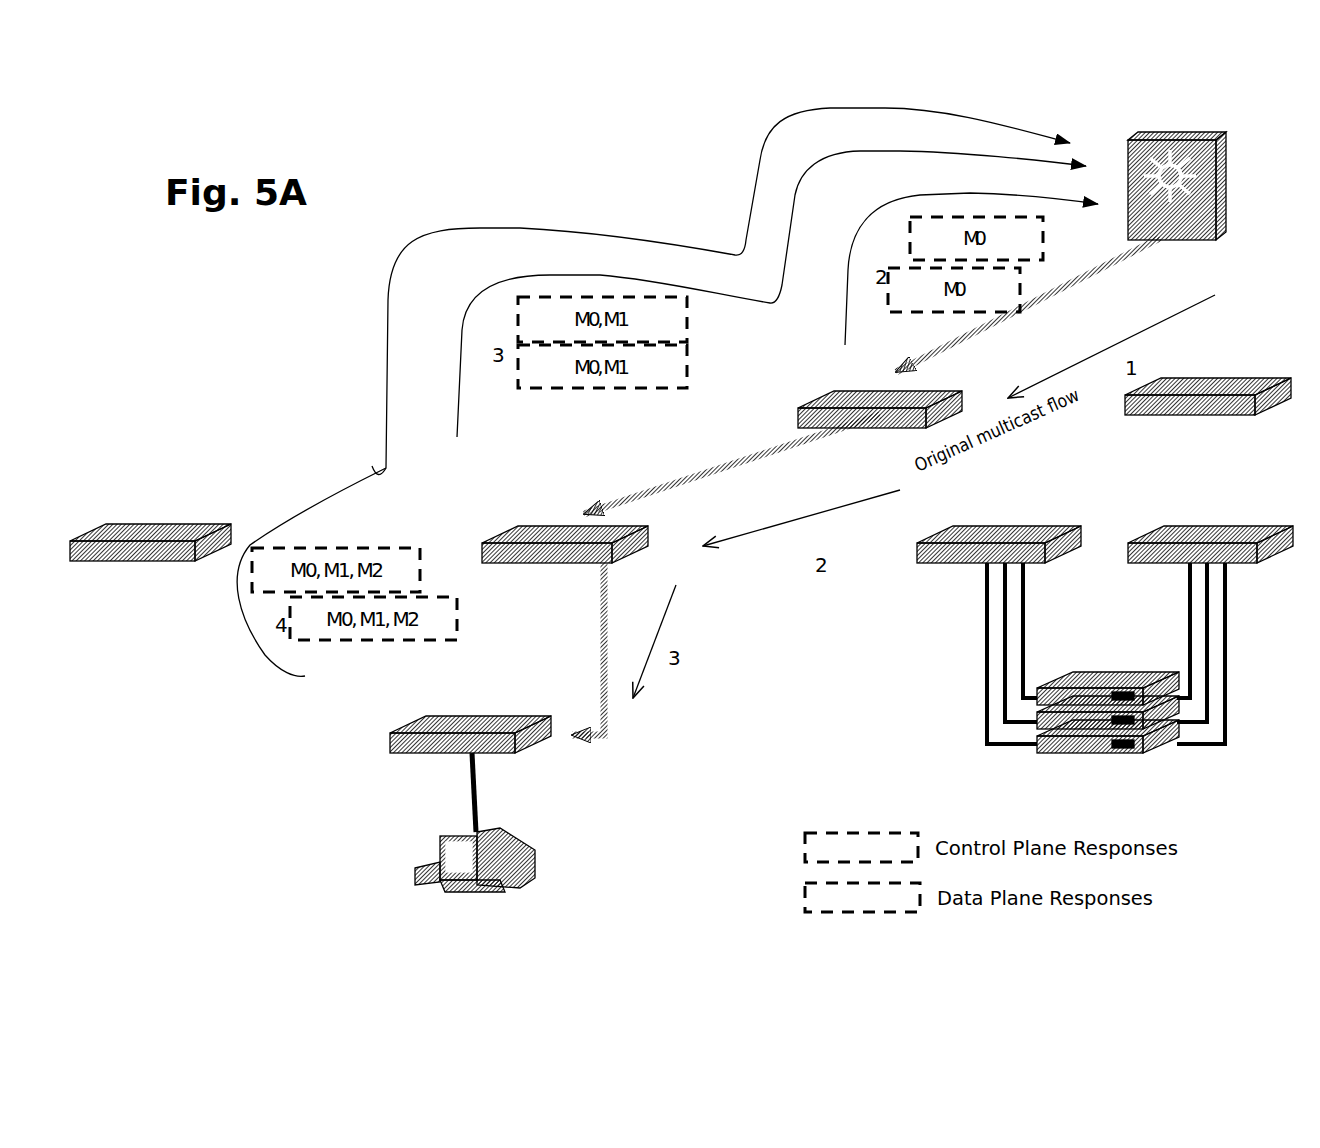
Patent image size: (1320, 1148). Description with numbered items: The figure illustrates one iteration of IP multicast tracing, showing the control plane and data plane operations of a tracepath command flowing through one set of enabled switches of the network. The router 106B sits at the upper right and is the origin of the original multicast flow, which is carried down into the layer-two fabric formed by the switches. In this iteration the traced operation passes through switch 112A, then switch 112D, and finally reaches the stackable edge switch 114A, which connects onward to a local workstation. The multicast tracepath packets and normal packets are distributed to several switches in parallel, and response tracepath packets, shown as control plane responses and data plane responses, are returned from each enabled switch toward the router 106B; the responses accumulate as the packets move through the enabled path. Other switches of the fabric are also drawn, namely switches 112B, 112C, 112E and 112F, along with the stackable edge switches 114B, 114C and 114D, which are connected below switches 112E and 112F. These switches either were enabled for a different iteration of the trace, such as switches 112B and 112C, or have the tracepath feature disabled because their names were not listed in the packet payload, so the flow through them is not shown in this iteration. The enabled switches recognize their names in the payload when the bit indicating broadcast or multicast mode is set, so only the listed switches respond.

The router 106B is at (1217, 210).
The switch 112A is at (805, 414).
The switch 112B is at (1150, 418).
The switch 112C is at (137, 525).
The switch 112D is at (505, 563).
The switch 112E is at (1033, 567).
The switch 112F is at (1167, 567).
The stackable edge switch 114A is at (483, 755).
The stackable edge switch 114B is at (1090, 672).
The stackable edge switch 114C is at (1177, 705).
The stackable edge switch 114D is at (1088, 752).